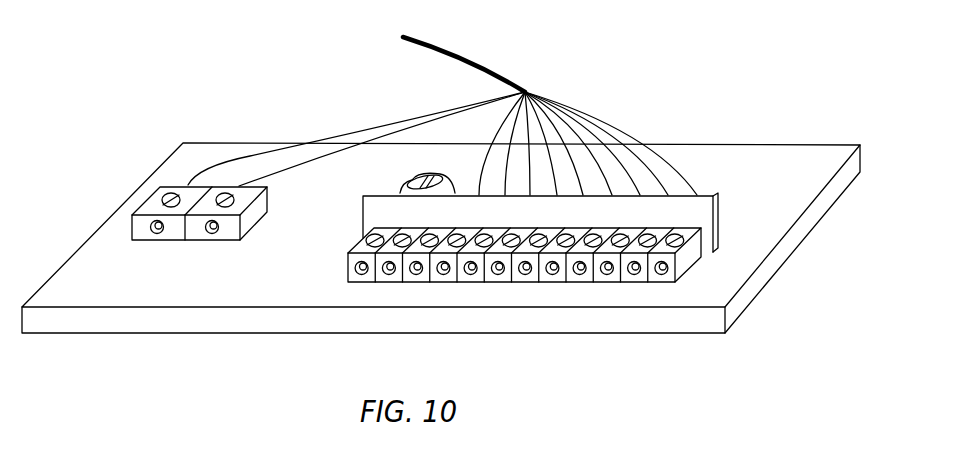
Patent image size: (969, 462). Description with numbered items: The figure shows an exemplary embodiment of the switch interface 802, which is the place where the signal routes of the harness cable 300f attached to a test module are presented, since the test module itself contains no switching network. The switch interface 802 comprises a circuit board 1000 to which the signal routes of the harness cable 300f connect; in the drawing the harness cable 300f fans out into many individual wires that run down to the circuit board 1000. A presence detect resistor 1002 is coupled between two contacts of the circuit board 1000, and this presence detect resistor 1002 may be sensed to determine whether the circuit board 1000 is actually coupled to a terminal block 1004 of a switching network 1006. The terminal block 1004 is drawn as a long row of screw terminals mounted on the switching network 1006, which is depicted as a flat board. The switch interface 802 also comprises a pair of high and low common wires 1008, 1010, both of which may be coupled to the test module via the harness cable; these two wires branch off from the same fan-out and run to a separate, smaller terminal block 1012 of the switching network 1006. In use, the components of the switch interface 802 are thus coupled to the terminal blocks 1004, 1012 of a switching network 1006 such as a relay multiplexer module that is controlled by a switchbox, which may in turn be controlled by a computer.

The circuit board 1000 is at (720, 227).
The presence detect resistor 1002 is at (425, 173).
The terminal block 1004 is at (683, 271).
The switching network 1006 is at (237, 290).
The high common wire 1008 is at (287, 147).
The low common wire 1010 is at (290, 173).
The terminal block 1012 is at (130, 227).
The harness cable 300f is at (453, 72).
The switch interface 802 is at (588, 88).